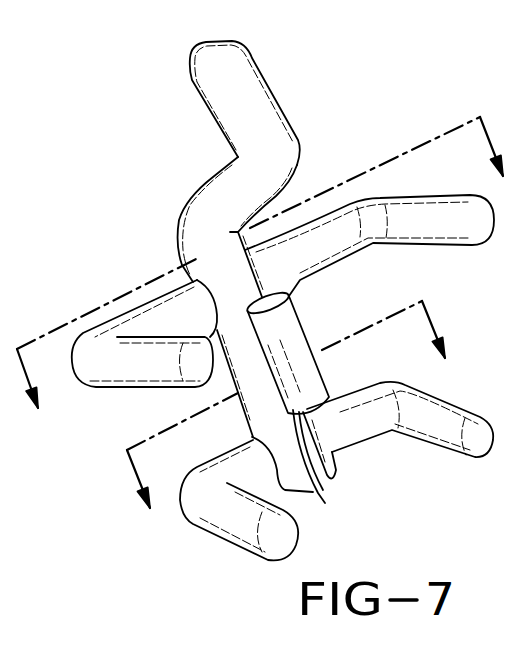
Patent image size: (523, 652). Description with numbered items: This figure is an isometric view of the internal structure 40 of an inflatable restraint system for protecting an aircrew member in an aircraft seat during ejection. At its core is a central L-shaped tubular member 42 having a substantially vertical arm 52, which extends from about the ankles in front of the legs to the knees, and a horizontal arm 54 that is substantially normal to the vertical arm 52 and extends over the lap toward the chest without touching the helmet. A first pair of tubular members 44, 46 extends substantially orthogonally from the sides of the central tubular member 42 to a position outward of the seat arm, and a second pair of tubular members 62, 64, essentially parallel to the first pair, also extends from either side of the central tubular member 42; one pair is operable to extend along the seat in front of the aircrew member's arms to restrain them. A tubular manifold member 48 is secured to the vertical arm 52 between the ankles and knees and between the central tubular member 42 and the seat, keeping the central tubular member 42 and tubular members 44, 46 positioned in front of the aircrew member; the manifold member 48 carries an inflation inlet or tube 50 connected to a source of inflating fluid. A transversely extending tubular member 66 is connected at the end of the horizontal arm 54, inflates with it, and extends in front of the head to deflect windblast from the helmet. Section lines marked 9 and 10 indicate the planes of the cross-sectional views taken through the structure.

The internal structure 40 is at (318, 90).
The central L-shaped tubular member 42 is at (160, 198).
The tubular member 44 is at (433, 227).
The tubular member 46 is at (110, 367).
The tubular manifold member 48 is at (288, 332).
The inflation inlet or tube 50 is at (325, 503).
The vertical arm 52 is at (252, 430).
The horizontal arm 54 is at (211, 174).
The tubular member 62 is at (458, 437).
The tubular member 64 is at (235, 515).
The transversely extending tubular member 66 is at (233, 73).
The section line 9- 9 is at (265, 279).
The section line 10- 10 is at (295, 421).